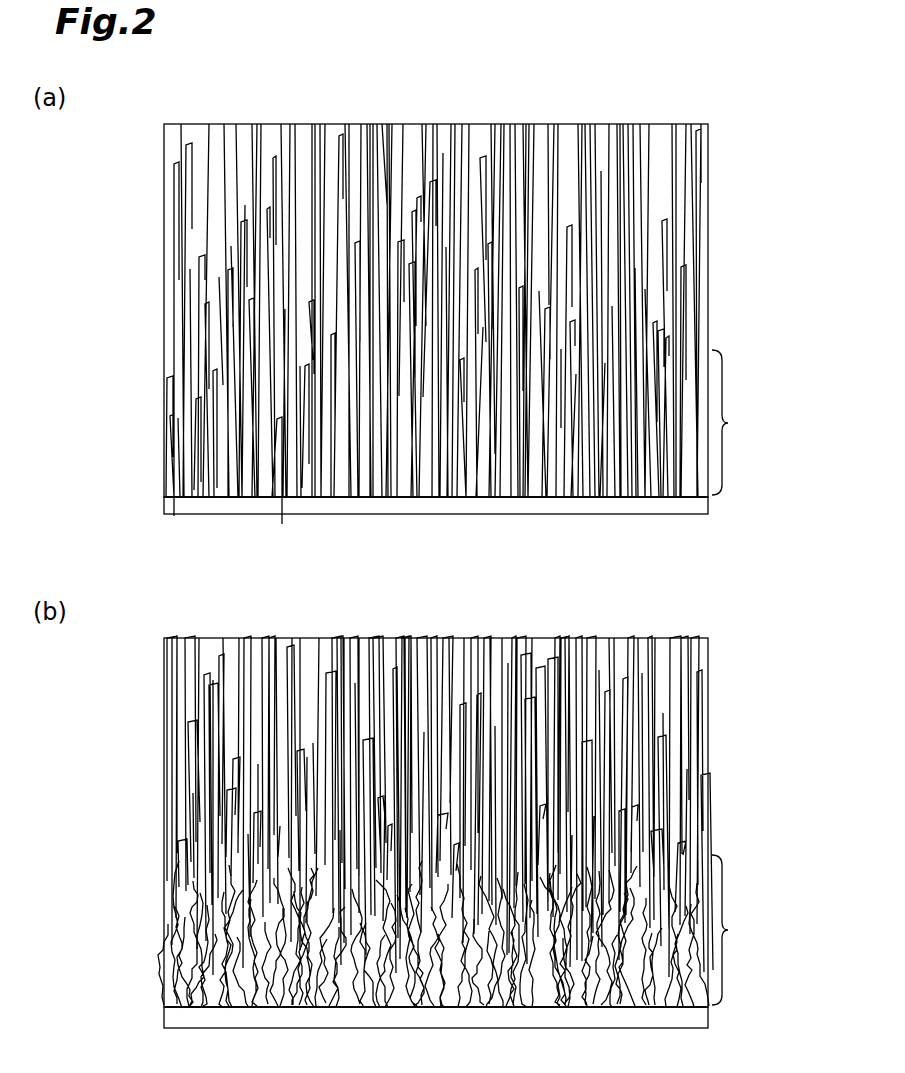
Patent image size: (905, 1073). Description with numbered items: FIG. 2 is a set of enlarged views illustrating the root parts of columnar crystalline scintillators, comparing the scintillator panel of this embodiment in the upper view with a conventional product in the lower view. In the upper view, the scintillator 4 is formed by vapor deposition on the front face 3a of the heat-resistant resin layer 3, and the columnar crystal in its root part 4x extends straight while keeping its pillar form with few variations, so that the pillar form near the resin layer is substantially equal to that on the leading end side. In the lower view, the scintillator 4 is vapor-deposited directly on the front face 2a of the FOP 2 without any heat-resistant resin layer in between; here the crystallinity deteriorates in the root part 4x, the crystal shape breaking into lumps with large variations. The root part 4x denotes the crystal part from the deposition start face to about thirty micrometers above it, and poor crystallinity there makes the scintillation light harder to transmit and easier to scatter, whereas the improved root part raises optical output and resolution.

The scintillator 4 is at (714, 180).
The root part 4x is at (737, 677).
The heat-resistant resin layer 3 is at (158, 512).
The front face of the heat-resistant resin layer 3a is at (218, 497).
The FOP 2 is at (158, 1020).
The front face of the FOP 2a is at (224, 1007).